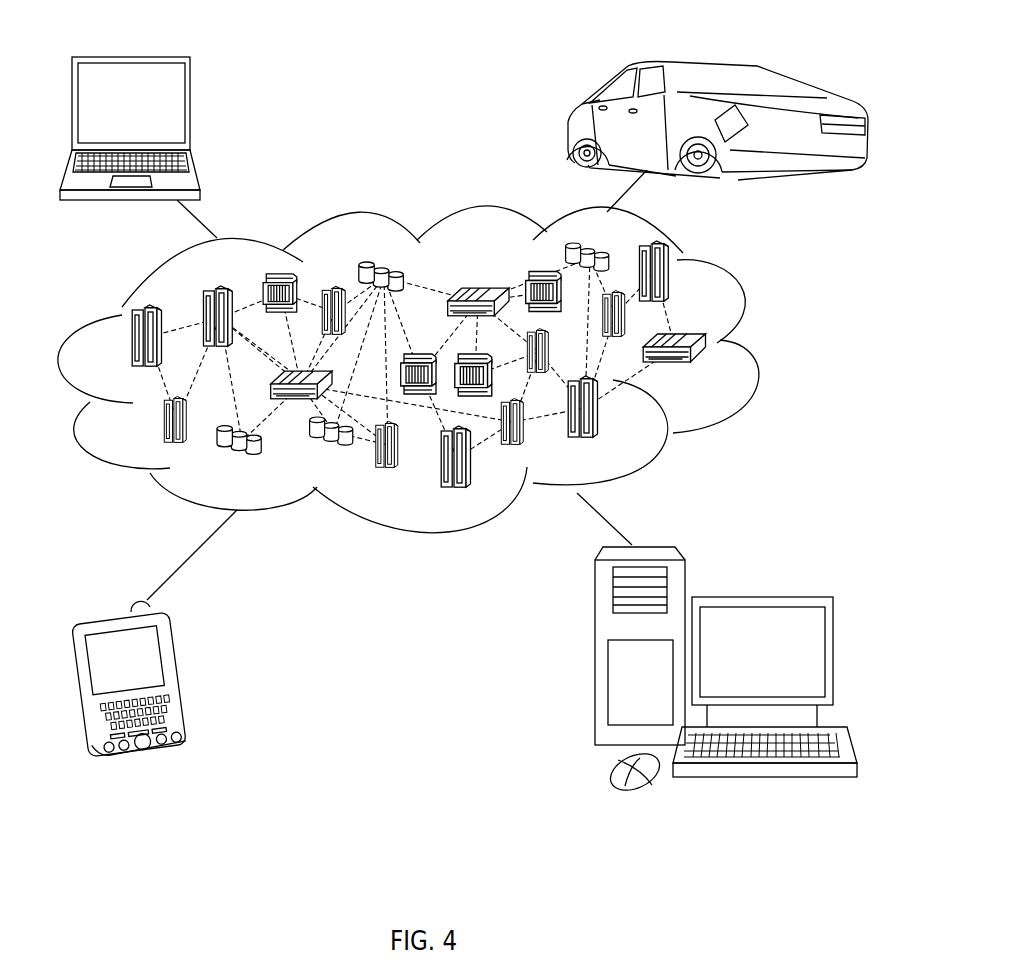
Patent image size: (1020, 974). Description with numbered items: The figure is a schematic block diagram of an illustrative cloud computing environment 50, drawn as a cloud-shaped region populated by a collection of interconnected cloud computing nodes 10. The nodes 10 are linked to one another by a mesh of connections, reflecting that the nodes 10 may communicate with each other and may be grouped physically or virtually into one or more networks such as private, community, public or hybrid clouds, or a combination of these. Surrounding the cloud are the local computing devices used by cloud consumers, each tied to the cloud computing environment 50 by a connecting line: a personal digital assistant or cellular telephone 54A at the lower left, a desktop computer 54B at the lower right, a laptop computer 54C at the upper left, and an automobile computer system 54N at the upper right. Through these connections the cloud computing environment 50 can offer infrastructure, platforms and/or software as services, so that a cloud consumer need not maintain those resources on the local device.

The cloud computing node 10 is at (716, 375).
The cloud computing environment 50 is at (760, 346).
The personal digital assistant or cellular telephone 54A is at (183, 675).
The desktop computer 54B is at (758, 597).
The laptop computer 54C is at (190, 110).
The automobile computer system 54N is at (573, 122).